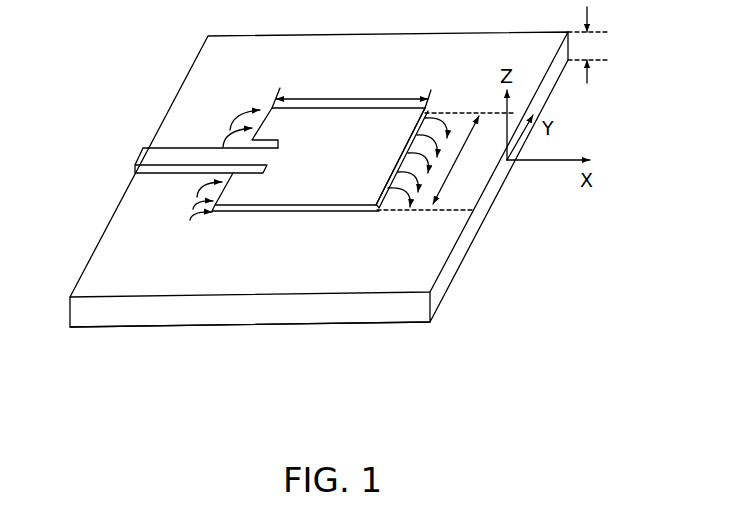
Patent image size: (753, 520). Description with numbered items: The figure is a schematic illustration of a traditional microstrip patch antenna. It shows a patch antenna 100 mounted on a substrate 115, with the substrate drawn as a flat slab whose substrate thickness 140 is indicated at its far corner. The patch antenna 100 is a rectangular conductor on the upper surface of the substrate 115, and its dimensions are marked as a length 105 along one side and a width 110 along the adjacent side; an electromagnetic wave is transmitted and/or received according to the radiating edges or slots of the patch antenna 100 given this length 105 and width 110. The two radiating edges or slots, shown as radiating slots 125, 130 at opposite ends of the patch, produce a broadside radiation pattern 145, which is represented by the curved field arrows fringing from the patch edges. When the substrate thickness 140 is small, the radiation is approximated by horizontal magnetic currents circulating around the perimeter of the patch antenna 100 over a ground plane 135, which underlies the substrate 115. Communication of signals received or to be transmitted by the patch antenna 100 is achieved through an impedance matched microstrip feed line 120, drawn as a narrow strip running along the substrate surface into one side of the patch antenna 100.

The patch antenna 100 is at (299, 126).
The length 105 is at (384, 100).
The width 110 is at (480, 173).
The substrate 115 is at (400, 308).
The microstrip feed line 120 is at (148, 147).
The radiating slot 125 is at (193, 218).
The radiating slot 130 is at (382, 208).
The ground plane 135 is at (113, 328).
The substrate thickness 140 is at (613, 46).
The broadside radiation pattern 145 is at (243, 112).